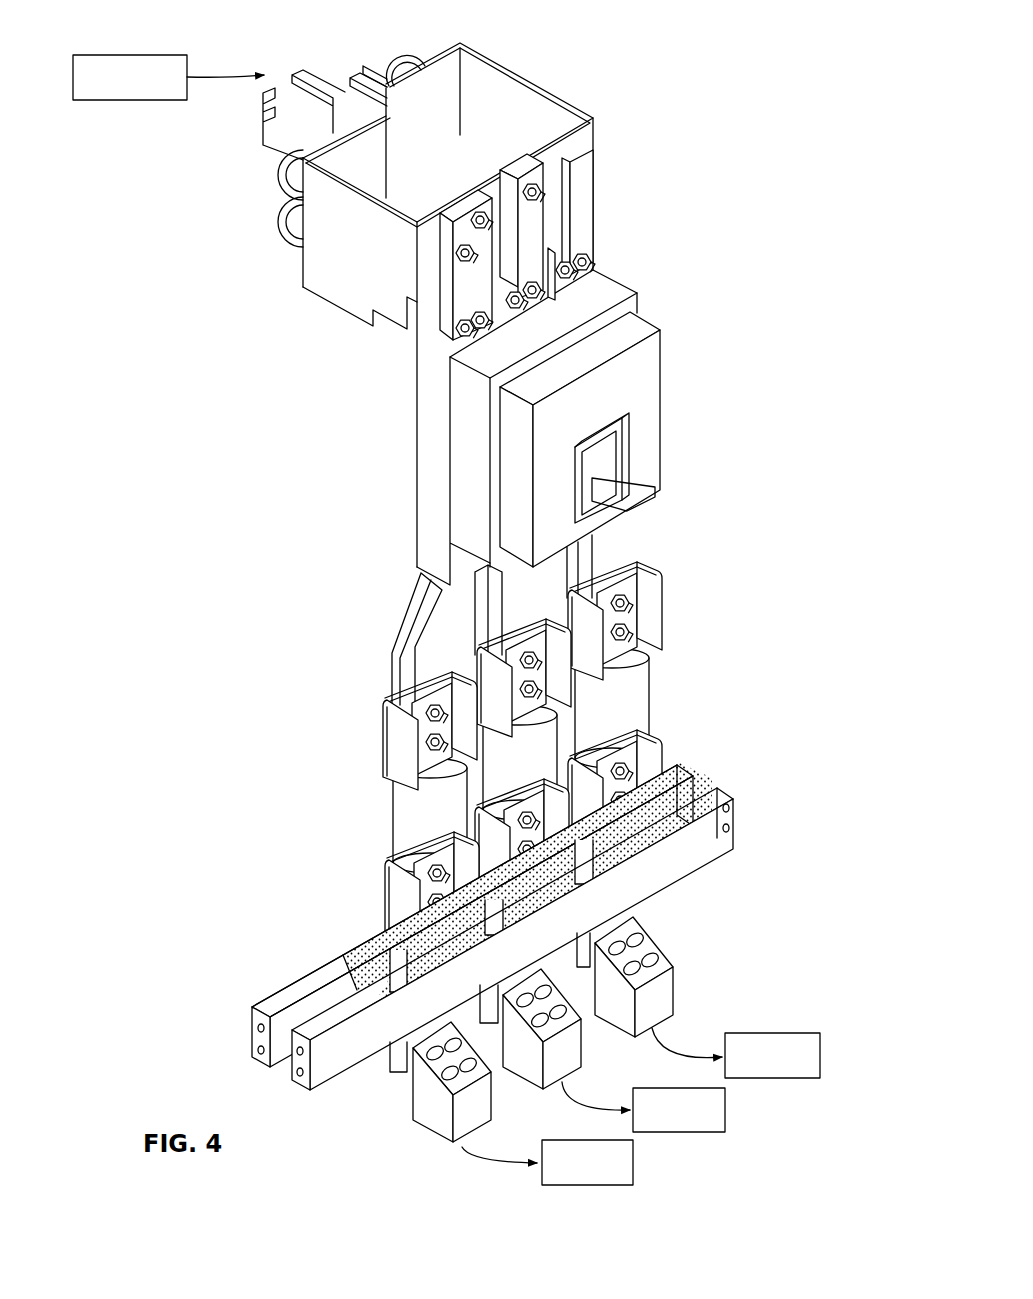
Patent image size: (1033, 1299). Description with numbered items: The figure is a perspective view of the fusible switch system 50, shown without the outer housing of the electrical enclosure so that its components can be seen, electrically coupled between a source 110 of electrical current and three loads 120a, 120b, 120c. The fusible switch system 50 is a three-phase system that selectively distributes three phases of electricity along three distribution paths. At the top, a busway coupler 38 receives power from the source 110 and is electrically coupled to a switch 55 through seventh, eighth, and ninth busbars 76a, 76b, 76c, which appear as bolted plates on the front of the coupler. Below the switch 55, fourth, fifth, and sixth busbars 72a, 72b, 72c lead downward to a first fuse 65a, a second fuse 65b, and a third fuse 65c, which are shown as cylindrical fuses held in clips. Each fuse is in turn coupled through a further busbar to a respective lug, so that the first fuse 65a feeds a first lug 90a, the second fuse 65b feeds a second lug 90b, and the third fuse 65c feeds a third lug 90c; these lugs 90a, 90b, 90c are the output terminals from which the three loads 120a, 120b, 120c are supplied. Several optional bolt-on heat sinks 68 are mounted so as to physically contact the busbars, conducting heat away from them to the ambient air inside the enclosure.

The fusible switch system 50 is at (690, 66).
The source 110 is at (150, 56).
The busway coupler 38 is at (450, 314).
The seventh busbar 76a is at (472, 283).
The eighth busbar 76b is at (533, 230).
The ninth busbar 76c is at (587, 245).
The switch 55 is at (640, 376).
The fourth busbar 72a is at (430, 635).
The fifth busbar 72b is at (510, 597).
The sixth busbar 72c is at (613, 557).
The bolt-on heat sink 68 is at (647, 612).
The first fuse 65a is at (408, 805).
The second fuse 65b is at (490, 867).
The third fuse 65c is at (627, 707).
The first lug 90a is at (420, 1110).
The second lug 90b is at (570, 1047).
The third lug 90c is at (663, 990).
The first load 120a is at (635, 1155).
The second load 120b is at (693, 1132).
The third load 120c is at (748, 1080).